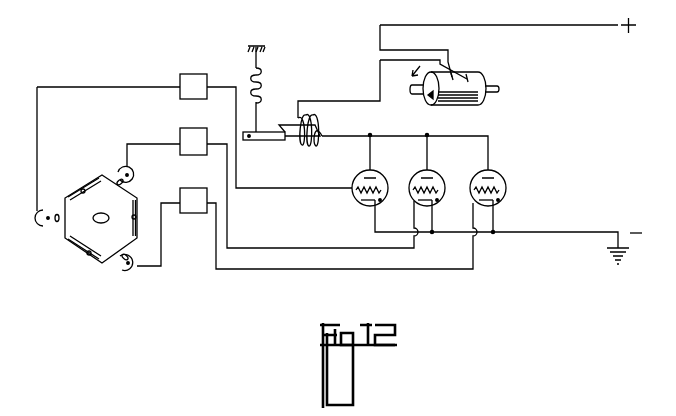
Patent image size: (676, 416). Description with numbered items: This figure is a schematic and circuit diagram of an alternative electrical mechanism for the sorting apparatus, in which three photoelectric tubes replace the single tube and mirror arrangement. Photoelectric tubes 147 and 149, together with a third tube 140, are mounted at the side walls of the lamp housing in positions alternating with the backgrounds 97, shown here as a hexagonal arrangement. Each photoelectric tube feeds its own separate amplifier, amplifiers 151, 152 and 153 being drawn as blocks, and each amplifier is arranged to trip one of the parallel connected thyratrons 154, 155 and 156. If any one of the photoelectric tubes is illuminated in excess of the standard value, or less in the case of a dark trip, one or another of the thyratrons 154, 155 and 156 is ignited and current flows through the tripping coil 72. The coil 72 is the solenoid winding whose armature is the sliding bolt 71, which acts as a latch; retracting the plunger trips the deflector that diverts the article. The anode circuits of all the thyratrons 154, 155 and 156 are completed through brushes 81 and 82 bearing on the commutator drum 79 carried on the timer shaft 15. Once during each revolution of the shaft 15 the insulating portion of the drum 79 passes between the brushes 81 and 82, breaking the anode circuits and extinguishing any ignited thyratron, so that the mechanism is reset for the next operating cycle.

The timer shaft 15 is at (498, 88).
The sliding bolt 71 is at (291, 141).
The solenoid winding 72 is at (310, 146).
The drum 79 is at (479, 73).
The brush 81 is at (453, 77).
The brush 82 is at (468, 80).
The backgrounds 97 is at (81, 191).
The contact 140 is at (135, 274).
The photoelectric tube 147 is at (42, 228).
The photoelectric tube 149 is at (122, 168).
The amplifier 151 is at (200, 74).
The amplifier 152 is at (194, 155).
The amplifier 153 is at (194, 213).
The thyratron 154 is at (383, 176).
The thyratron 155 is at (441, 176).
The thyratron 156 is at (503, 177).